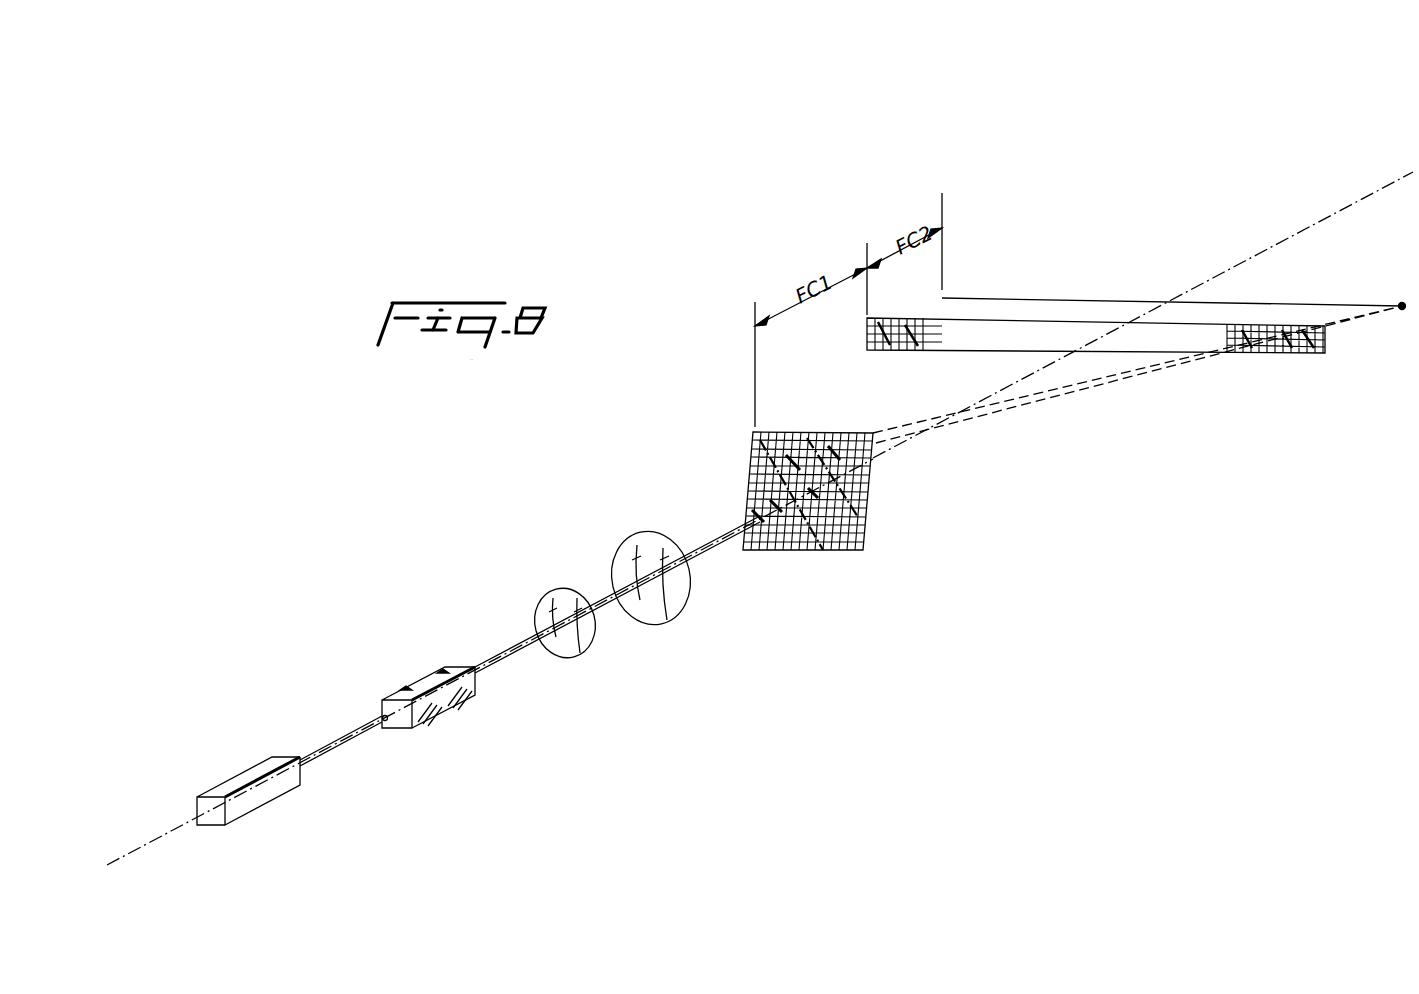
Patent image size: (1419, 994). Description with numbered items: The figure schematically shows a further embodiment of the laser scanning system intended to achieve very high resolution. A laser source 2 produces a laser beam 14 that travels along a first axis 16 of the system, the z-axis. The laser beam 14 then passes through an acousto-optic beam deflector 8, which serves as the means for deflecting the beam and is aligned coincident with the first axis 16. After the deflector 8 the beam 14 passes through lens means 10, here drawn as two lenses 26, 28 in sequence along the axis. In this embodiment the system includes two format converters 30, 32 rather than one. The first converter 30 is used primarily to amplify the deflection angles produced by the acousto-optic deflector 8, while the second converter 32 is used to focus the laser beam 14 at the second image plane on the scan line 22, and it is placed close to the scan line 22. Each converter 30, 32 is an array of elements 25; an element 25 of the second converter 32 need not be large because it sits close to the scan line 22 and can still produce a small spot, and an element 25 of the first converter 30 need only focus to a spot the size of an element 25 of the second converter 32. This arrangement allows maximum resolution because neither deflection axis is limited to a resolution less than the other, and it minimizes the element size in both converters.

The laser source 2 is at (243, 775).
The acousto-optic beam deflector 8 is at (422, 680).
The lens means 10 is at (601, 587).
The laser beam 14 is at (350, 745).
The first axis 16 is at (1325, 218).
The scan line 22 is at (1318, 305).
The lens element 25 is at (870, 489).
The first lens 26 is at (548, 598).
The second lens 28 is at (630, 535).
The first format converter 30 is at (865, 534).
The second format converter 32 is at (1282, 345).